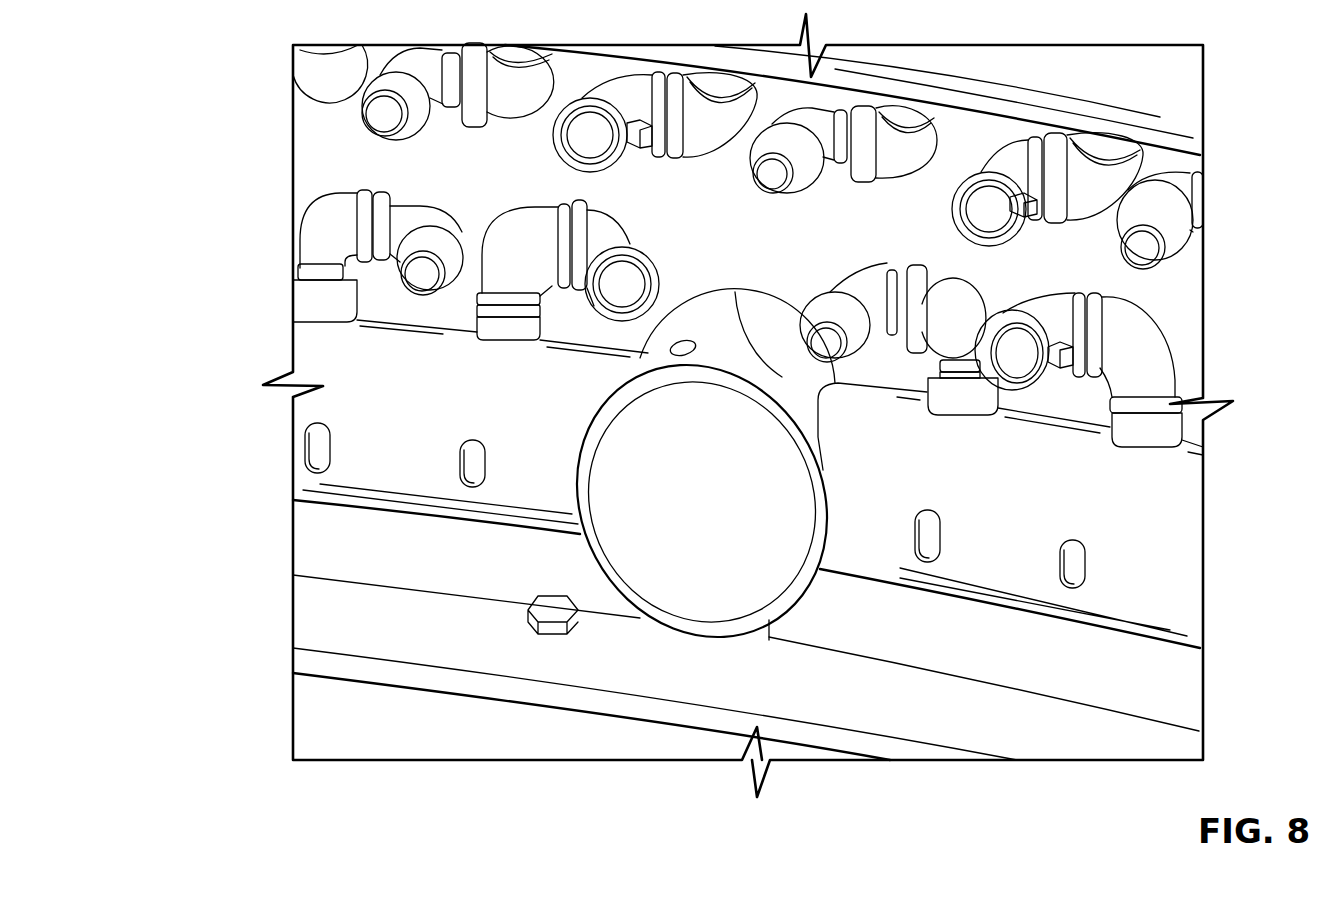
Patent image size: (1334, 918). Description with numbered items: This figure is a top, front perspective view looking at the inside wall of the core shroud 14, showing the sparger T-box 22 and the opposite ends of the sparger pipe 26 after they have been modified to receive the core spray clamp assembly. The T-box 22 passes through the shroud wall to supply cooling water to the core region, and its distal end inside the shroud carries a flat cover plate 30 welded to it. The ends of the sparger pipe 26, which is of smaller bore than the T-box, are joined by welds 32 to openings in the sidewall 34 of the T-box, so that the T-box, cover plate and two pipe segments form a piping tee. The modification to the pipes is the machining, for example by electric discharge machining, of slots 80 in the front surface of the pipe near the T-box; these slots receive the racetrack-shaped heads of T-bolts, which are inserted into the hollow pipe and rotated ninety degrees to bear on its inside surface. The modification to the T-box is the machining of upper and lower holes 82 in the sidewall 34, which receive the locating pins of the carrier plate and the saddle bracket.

The core shroud 14 is at (1167, 683).
The sparger T-box 22 is at (593, 553).
The sparger pipe 26 is at (317, 360).
The cover plate 30 is at (702, 510).
The weld 32 is at (793, 596).
The sidewall 34 is at (735, 292).
The slots 80 is at (478, 480).
The holes 82 is at (633, 371).